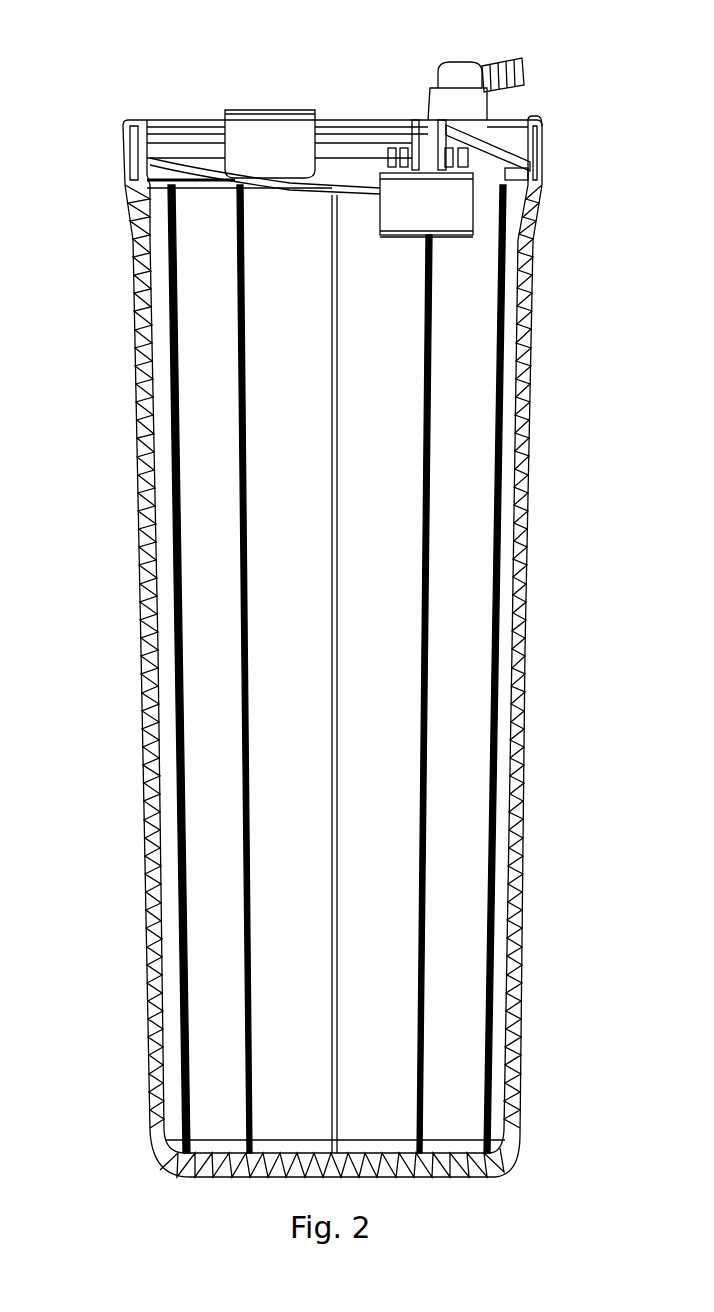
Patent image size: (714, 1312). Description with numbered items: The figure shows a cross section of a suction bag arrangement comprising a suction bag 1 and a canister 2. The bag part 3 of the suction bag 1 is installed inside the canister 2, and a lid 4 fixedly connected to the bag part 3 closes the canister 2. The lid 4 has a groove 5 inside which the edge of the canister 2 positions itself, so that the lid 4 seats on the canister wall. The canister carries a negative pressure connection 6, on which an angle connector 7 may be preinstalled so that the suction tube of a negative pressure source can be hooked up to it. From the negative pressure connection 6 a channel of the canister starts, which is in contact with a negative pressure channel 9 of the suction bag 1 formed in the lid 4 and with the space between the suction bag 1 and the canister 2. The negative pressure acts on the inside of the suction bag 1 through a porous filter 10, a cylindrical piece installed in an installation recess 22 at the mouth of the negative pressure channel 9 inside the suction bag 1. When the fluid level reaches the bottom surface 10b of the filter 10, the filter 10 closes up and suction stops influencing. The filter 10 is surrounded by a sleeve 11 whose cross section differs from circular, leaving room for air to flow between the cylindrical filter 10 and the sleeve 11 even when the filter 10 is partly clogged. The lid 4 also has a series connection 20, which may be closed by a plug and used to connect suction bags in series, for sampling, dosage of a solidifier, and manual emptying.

The suction bag 1 is at (338, 120).
The canister 2 is at (530, 318).
The bag part 3 is at (480, 358).
The lid 4 is at (382, 118).
The groove 5 is at (543, 135).
The negative pressure connection 6 is at (432, 100).
The angle connector 7 is at (505, 70).
The negative pressure channel 9 is at (485, 145).
The filter 10 is at (440, 216).
The bottom surface 10b is at (445, 238).
The sleeve 11 is at (513, 173).
The series connection 20 is at (265, 140).
The installation recess 22 is at (375, 172).